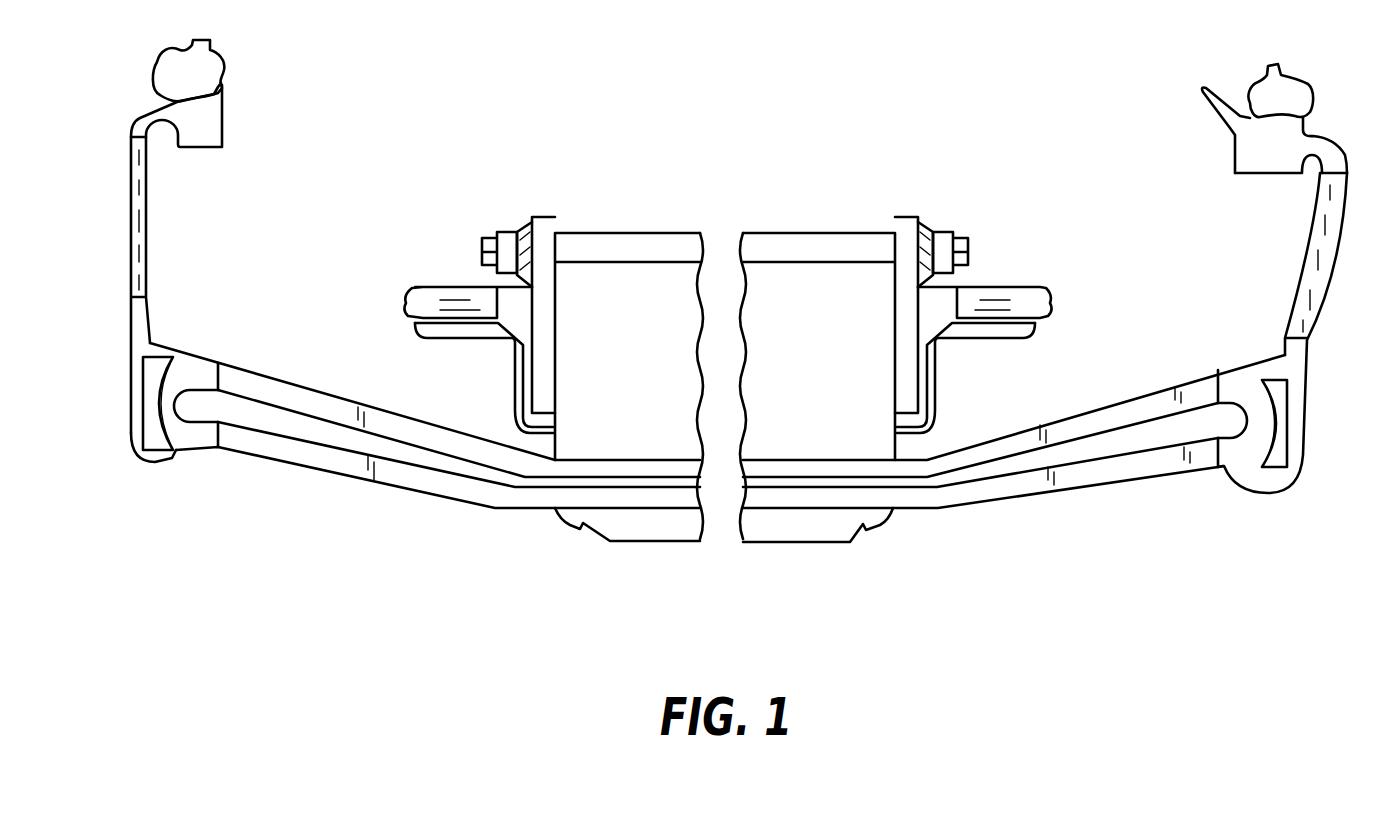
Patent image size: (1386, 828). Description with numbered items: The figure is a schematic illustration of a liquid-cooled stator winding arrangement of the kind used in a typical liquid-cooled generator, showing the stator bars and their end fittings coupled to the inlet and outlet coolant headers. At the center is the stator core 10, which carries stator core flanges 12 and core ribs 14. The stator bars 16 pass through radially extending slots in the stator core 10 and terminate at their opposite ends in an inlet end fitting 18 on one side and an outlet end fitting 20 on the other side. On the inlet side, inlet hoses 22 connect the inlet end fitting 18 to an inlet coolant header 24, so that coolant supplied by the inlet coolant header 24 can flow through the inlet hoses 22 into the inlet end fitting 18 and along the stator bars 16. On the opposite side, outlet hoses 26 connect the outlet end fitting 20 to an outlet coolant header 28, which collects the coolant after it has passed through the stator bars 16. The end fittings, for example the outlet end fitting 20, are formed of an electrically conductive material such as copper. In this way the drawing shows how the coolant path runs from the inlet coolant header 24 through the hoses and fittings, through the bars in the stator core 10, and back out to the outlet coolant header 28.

The stator core 10 is at (770, 527).
The stator core flanges 12 is at (543, 233).
The core ribs 14 is at (806, 247).
The stator bars 16 is at (1069, 480).
The inlet end fitting 18 is at (1272, 417).
The outlet end fitting 20 is at (188, 445).
The inlet hoses 22 is at (1317, 256).
The inlet coolant header 24 is at (1264, 157).
The outlet hoses 26 is at (138, 220).
The outlet coolant header 28 is at (208, 129).